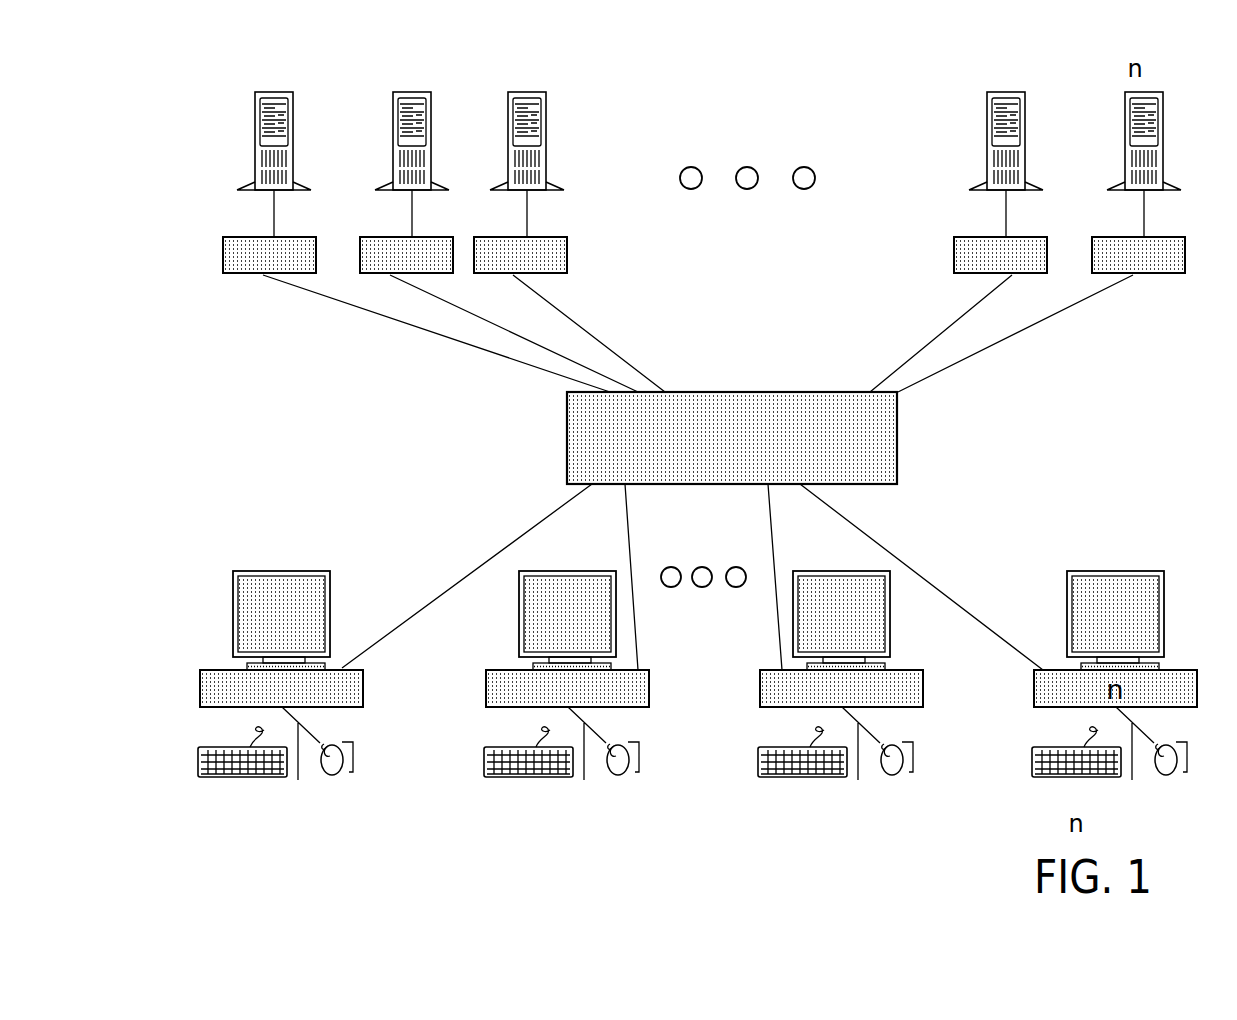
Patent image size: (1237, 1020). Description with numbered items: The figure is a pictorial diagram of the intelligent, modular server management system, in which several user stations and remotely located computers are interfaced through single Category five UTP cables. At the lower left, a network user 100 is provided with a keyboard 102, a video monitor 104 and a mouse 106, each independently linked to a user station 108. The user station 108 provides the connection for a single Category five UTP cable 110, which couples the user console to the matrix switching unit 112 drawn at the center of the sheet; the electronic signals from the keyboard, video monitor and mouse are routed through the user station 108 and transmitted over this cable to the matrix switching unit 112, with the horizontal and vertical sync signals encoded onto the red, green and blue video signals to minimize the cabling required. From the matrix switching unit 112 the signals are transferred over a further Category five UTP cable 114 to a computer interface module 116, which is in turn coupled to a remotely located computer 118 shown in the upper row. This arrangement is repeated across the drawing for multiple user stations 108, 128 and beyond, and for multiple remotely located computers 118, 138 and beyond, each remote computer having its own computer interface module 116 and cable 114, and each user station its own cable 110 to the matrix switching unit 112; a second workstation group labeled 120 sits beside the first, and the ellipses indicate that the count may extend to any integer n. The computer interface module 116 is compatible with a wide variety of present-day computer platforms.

The network user 100 is at (281, 756).
The keyboard 102 is at (640, 752).
The video monitor 104 is at (698, 620).
The mouse 106 is at (773, 760).
The user station 108 is at (281, 688).
The Category 5 UTP cable 110 is at (692, 577).
The matrix switching unit 112 is at (732, 438).
The Category 5 UTP cable 114 is at (698, 333).
The computer interface module 116 is at (704, 255).
The remotely located computer 118 is at (274, 146).
The computer workstation 120 is at (567, 756).
The user station 128 is at (567, 688).
The remotely located computer 138 is at (412, 146).